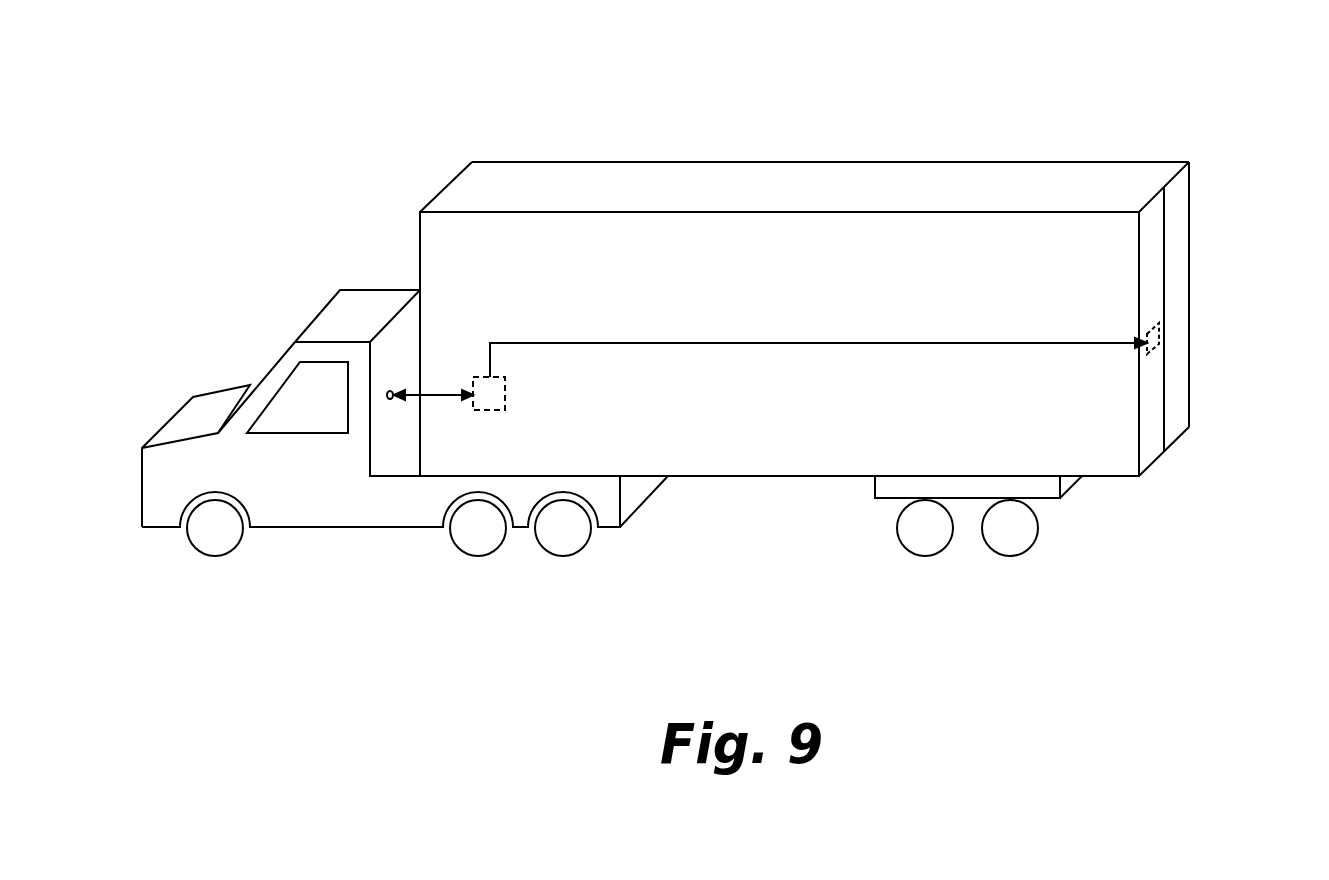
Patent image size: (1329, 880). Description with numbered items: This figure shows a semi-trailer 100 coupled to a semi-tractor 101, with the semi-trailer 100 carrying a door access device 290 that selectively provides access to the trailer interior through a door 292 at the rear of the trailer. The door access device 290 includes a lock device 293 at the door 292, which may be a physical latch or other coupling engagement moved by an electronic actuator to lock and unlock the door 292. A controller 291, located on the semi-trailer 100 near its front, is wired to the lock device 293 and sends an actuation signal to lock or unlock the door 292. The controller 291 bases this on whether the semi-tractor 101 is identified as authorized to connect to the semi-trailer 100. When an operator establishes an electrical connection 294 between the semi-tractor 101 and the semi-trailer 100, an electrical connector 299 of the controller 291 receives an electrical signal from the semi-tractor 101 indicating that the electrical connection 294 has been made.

The semi-trailer 100 is at (787, 161).
The semi-tractor 101 is at (226, 388).
The door access device 290 is at (654, 296).
The controller 291 is at (505, 395).
The door 292 is at (1180, 313).
The lock device 293 is at (1155, 347).
The electrical connection 294 is at (420, 397).
The electrical connector 299 is at (473, 377).